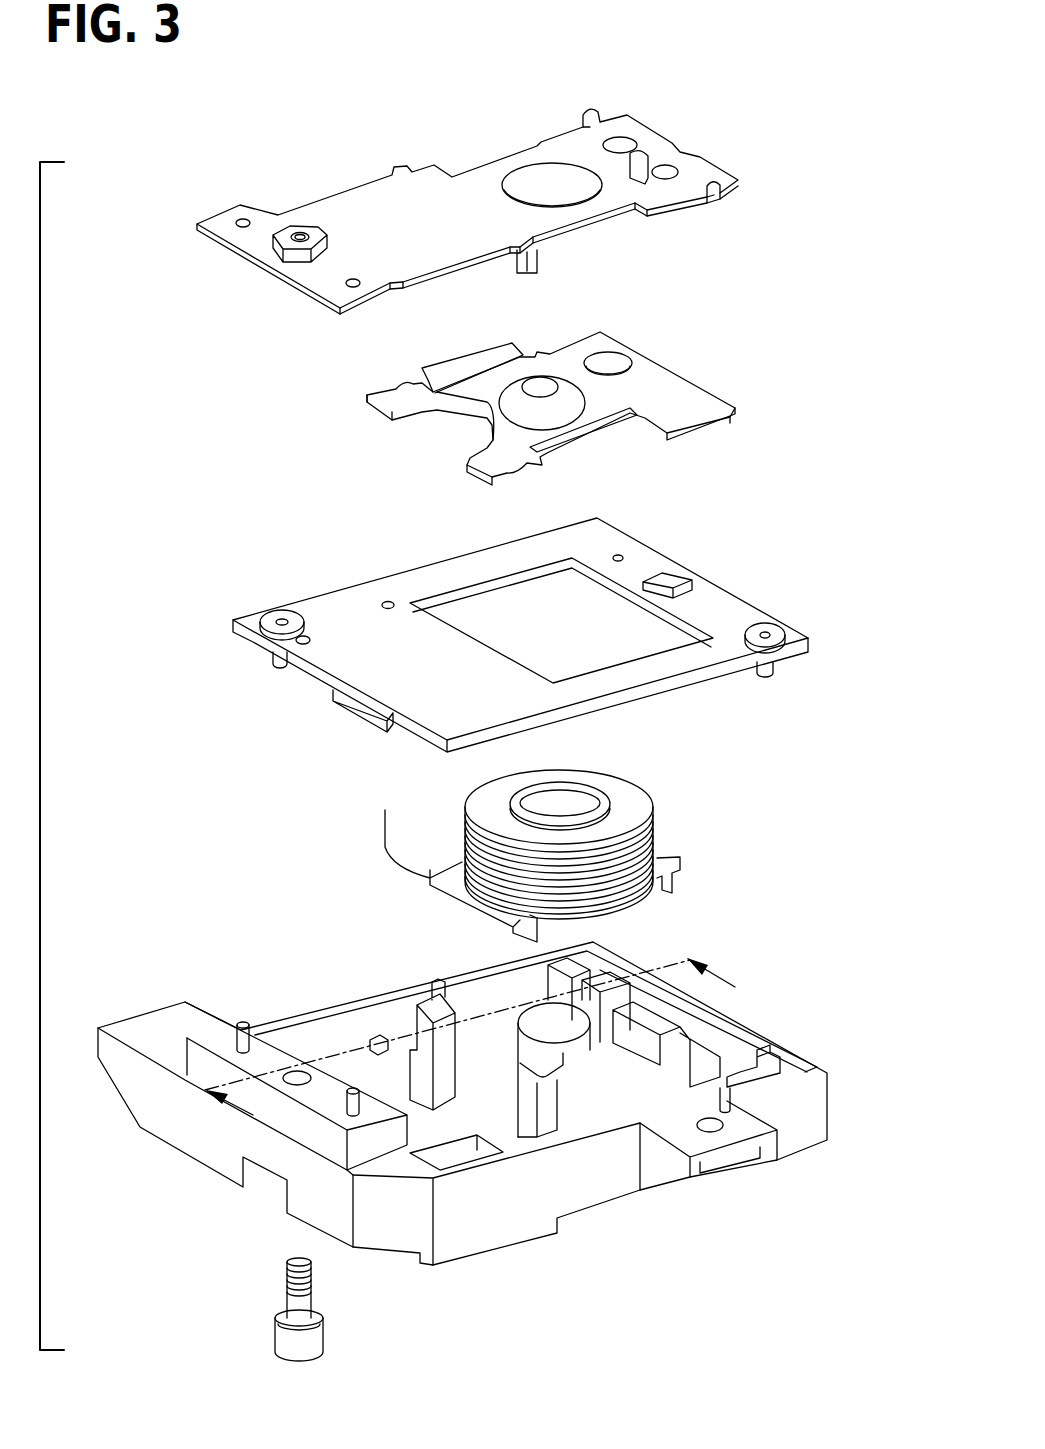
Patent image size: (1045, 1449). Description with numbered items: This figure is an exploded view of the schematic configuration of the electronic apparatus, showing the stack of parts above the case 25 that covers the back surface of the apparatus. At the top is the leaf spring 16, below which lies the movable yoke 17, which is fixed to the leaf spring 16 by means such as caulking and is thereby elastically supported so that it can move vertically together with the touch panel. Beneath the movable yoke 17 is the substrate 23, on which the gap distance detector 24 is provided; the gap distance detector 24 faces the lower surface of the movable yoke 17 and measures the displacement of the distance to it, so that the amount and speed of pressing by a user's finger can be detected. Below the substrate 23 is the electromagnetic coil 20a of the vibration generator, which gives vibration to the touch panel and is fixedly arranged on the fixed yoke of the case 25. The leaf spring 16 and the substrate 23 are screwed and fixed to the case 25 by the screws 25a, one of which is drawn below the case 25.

The leaf spring 16 is at (705, 162).
The movable yoke 17 is at (697, 373).
The electromagnetic coil 20a is at (655, 842).
The substrate 23 is at (753, 610).
The gap distance detector 24 is at (692, 565).
The case 25 is at (802, 1113).
The screw 25a is at (283, 1335).